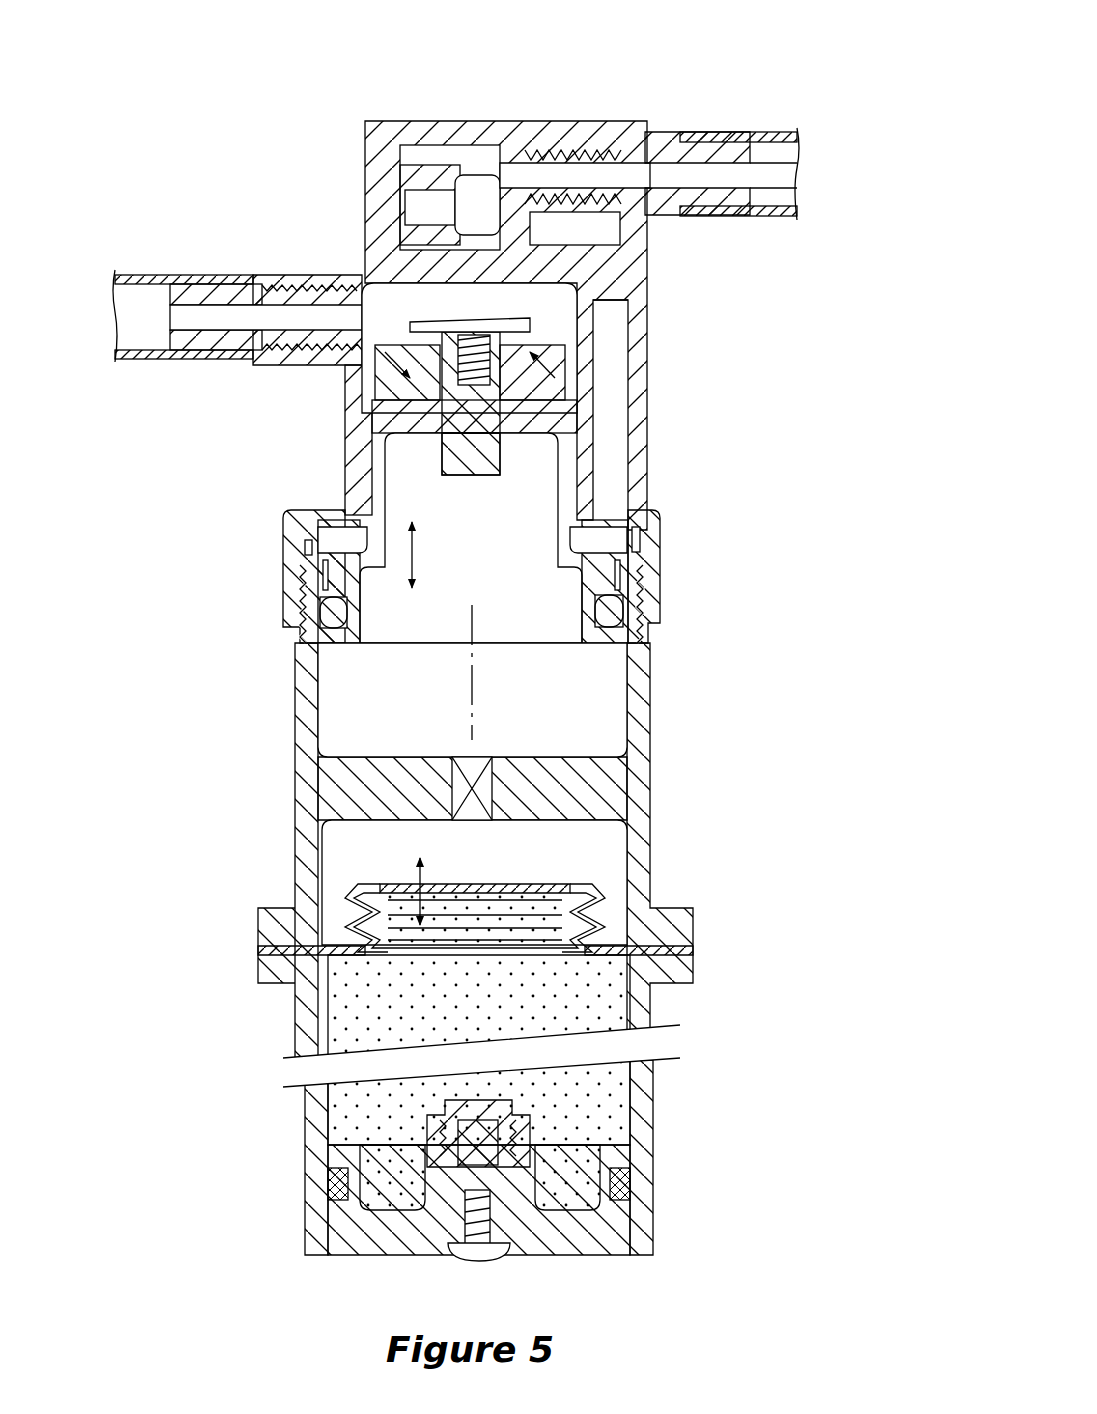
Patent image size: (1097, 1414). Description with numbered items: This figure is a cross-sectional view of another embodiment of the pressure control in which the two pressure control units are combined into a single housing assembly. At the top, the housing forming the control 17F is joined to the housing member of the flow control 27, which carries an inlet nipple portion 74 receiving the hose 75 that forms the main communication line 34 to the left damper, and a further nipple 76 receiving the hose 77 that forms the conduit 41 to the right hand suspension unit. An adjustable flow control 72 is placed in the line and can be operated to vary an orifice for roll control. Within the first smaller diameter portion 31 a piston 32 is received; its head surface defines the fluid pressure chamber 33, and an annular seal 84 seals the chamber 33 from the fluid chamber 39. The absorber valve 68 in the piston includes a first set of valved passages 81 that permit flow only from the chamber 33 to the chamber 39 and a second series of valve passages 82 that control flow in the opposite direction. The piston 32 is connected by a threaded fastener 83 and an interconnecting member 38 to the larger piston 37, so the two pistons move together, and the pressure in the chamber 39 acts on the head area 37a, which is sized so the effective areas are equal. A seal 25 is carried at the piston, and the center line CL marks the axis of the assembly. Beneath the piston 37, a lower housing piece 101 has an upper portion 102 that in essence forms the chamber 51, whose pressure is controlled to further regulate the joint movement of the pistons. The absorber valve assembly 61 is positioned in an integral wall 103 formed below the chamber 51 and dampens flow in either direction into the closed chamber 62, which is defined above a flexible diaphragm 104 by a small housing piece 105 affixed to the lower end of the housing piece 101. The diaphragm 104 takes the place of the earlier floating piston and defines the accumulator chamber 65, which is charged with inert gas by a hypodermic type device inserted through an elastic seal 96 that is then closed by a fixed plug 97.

The pressure control housing 17F is at (620, 78).
The adjustable flow control valve 72 is at (455, 165).
The nipple 76 is at (660, 132).
The hose 77 is at (770, 138).
The conduit 41 is at (762, 190).
The main communication line 34 is at (172, 278).
The inlet nipple portion 74 is at (350, 268).
The hose 75 is at (143, 330).
The fluid pressure chamber 33 is at (469, 348).
The first smaller diameter portion 31 is at (582, 300).
The first set of valved passages 81 is at (490, 325).
The second series of valve passages 82 is at (530, 375).
The absorber valve 68 is at (752, 338).
The annular seal 84 is at (345, 362).
The fluid chamber 39 is at (380, 402).
The piston 32 is at (570, 385).
The threaded fastener 83 is at (445, 400).
The interconnecting member 38 is at (500, 450).
The head area 37a is at (642, 530).
The piston 37 is at (656, 578).
The O-ring seal 25 is at (620, 610).
The lower housing piece 101 is at (295, 680).
The chamber 51 is at (622, 682).
The upper portion 102 is at (305, 735).
The center line CL is at (473, 710).
The integral wall 103 is at (360, 790).
The control cylinder 27 is at (262, 862).
The closed chamber 62 is at (338, 872).
The flexible diaphragm 104 is at (590, 885).
The absorber valve assembly 61 is at (480, 800).
The accumulator chamber 65 is at (610, 1080).
The small housing piece 105 is at (300, 1118).
The elastic seal 96 is at (520, 1125).
The fixed plug 97 is at (480, 1262).